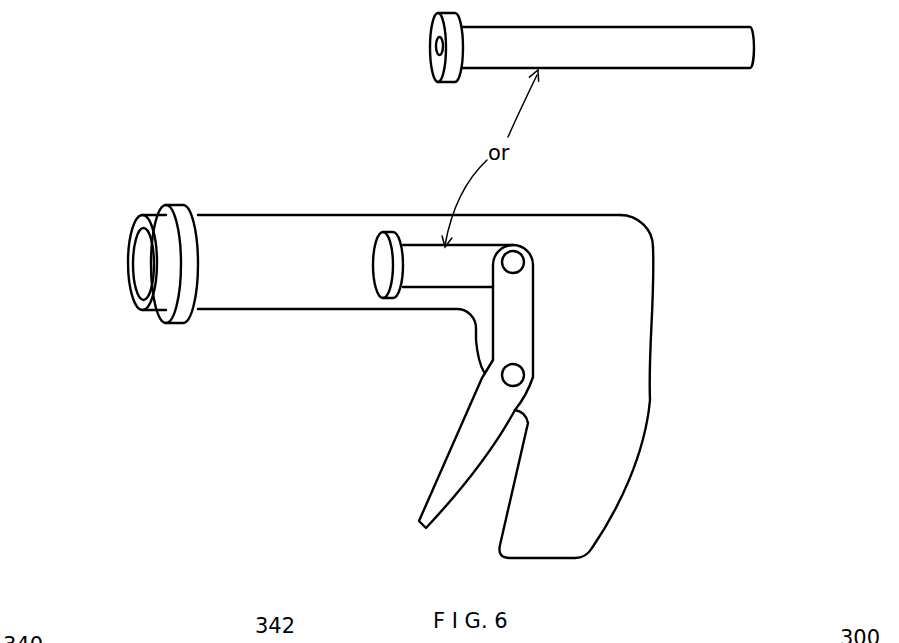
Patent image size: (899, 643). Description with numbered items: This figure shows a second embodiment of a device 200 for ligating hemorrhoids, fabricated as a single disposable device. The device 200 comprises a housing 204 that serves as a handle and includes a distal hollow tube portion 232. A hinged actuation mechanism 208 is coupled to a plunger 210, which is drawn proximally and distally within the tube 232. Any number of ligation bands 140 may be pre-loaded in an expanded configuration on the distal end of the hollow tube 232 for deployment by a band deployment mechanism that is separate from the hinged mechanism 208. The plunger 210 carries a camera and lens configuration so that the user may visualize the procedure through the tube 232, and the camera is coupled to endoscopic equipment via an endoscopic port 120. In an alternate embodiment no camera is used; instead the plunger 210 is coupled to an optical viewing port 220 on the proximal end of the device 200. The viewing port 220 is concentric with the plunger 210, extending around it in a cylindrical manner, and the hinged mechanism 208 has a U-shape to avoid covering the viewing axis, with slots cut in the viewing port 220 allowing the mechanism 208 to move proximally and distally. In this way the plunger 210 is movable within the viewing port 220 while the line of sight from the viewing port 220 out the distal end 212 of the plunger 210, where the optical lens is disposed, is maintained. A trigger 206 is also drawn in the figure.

The device for ligating hemorrhoids 200 is at (127, 122).
The ligation band 140 is at (177, 203).
The distal hollow tube portion 232 is at (300, 285).
The distal end of the plunger 212 is at (373, 247).
The plunger 210 is at (475, 262).
The hinged actuation mechanism 208 is at (515, 307).
The trigger 206 is at (497, 390).
The housing 204 is at (603, 240).
The endoscopic port 120 is at (653, 255).
The optical viewing port 220 is at (753, 50).